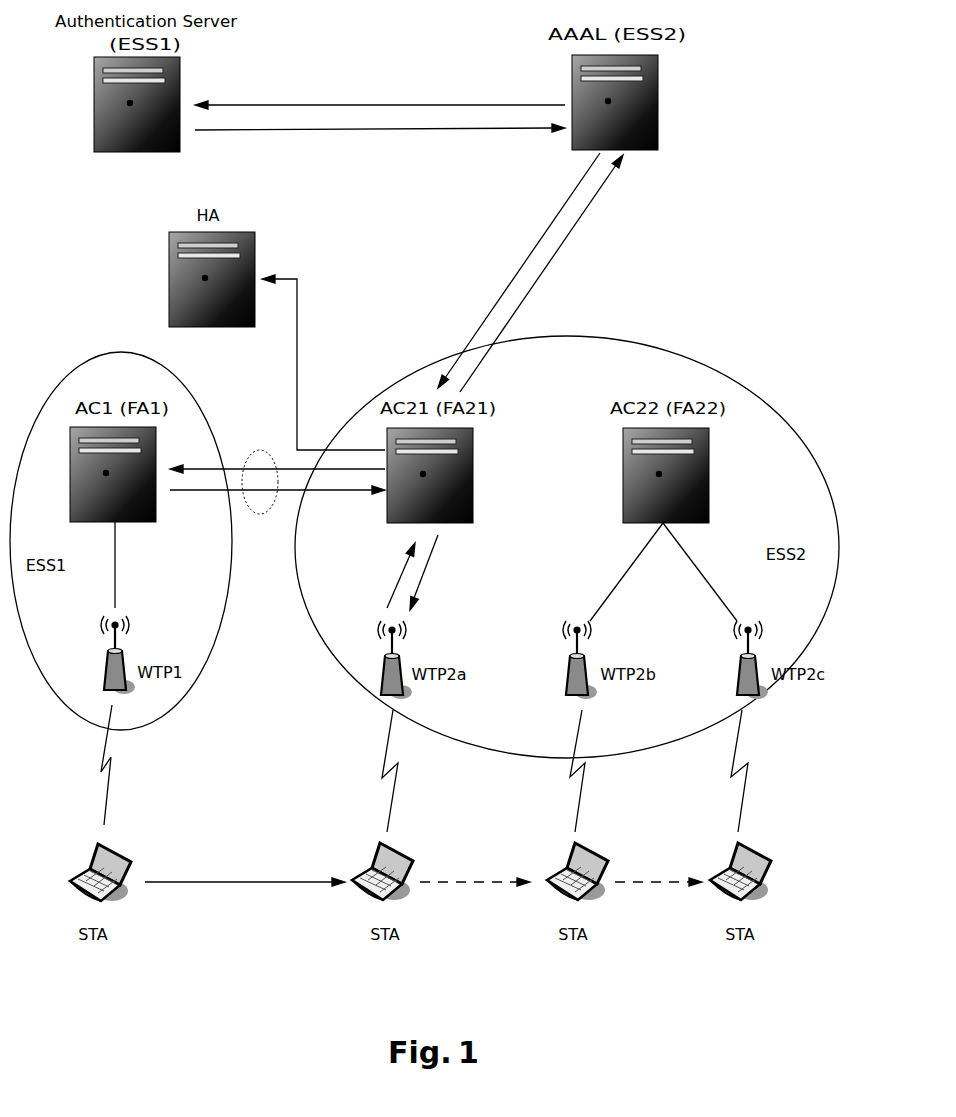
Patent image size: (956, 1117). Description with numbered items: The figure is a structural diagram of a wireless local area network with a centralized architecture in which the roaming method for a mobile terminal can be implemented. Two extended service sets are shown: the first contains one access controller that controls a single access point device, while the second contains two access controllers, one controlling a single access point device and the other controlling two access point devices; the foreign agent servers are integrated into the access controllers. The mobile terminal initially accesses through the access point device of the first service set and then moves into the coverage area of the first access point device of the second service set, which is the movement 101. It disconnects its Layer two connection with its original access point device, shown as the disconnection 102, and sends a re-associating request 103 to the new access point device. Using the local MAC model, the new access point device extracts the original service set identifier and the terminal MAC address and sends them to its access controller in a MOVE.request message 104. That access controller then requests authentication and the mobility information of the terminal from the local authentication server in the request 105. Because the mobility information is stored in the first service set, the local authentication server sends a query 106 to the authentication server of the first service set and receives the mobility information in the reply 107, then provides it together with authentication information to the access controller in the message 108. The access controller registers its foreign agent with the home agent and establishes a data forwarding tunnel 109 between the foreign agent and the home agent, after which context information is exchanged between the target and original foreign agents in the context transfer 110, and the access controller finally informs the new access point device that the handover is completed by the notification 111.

The movement of the mobile terminal STA from WTP1 coverage to WTP2a coverage 101 is at (245, 872).
The disconnection of the Layer 2 connection with WTP1 102 is at (126, 765).
The re-associating request to WTP2a 103 is at (405, 771).
The MOVE.request message from WTP2a to AC21 104 is at (391, 575).
The authentication and mobility information request from AC21 to AAAL 105 is at (541, 273).
The query from AAAL to the ESS1 authentication server 106 is at (380, 97).
The mobility information reply from the ESS1 authentication server to AAAL 107 is at (380, 139).
The provision of mobility and authentication information from AAAL to AC21 108 is at (519, 270).
The data forwarding tunnel between FA21 and HA 109 is at (323, 362).
The context information transfer between FA21 and FA1 110 is at (277, 493).
The handover completion notification to WTP2a 111 is at (434, 572).